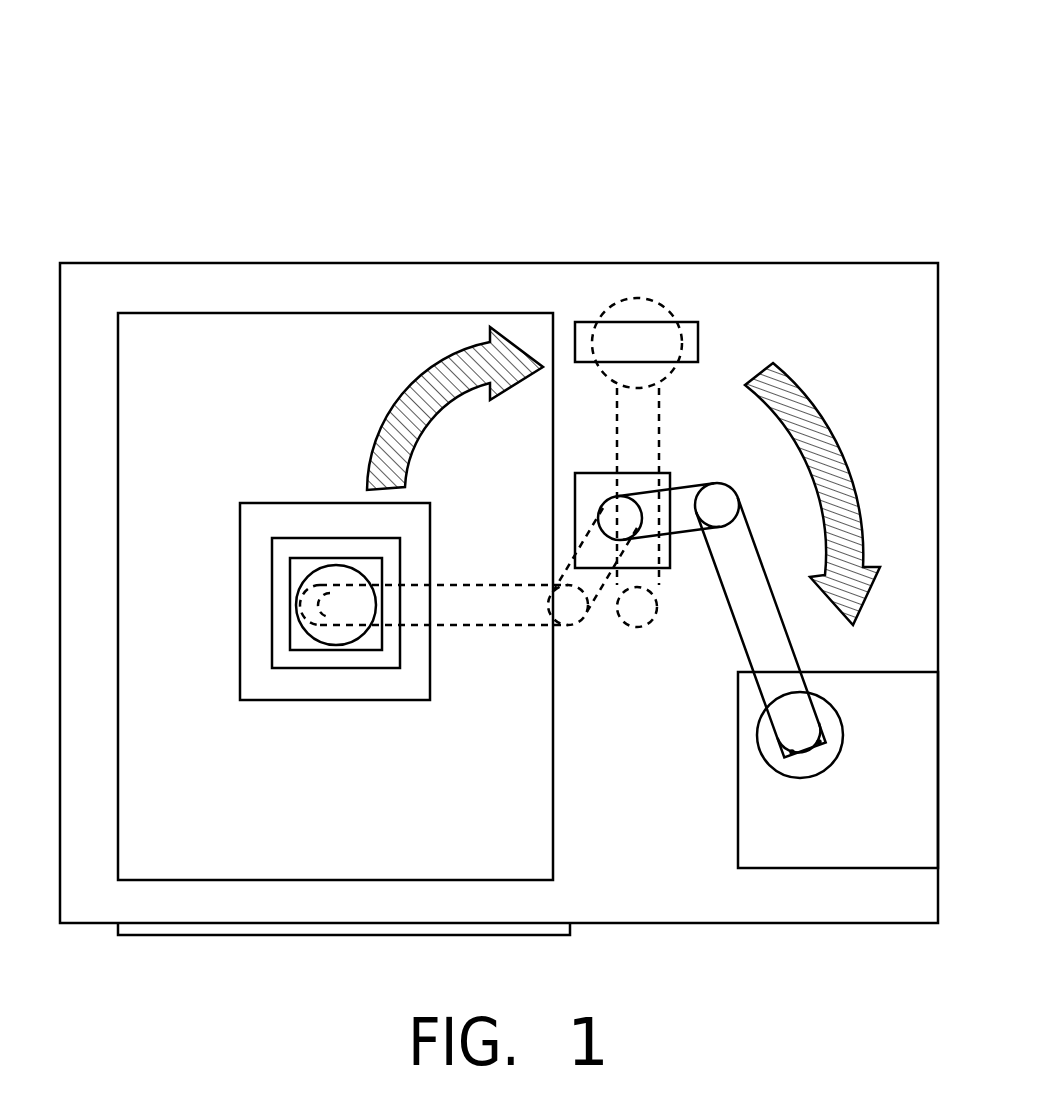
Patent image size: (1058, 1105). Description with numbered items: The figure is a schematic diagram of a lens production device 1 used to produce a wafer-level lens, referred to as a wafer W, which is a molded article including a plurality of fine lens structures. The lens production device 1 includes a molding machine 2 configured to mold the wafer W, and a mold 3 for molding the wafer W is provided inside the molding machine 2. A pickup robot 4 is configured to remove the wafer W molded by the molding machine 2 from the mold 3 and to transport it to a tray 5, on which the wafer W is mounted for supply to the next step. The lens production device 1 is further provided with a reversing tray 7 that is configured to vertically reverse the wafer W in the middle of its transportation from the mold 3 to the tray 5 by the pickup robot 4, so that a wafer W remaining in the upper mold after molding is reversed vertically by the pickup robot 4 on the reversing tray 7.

The lens production device 1 is at (820, 160).
The molding machine 2 is at (553, 765).
The mold 3 is at (400, 665).
The pickup robot 4 is at (670, 472).
The tray 5 is at (738, 703).
The reversing tray 7 is at (698, 342).
The wafer W is at (305, 572).